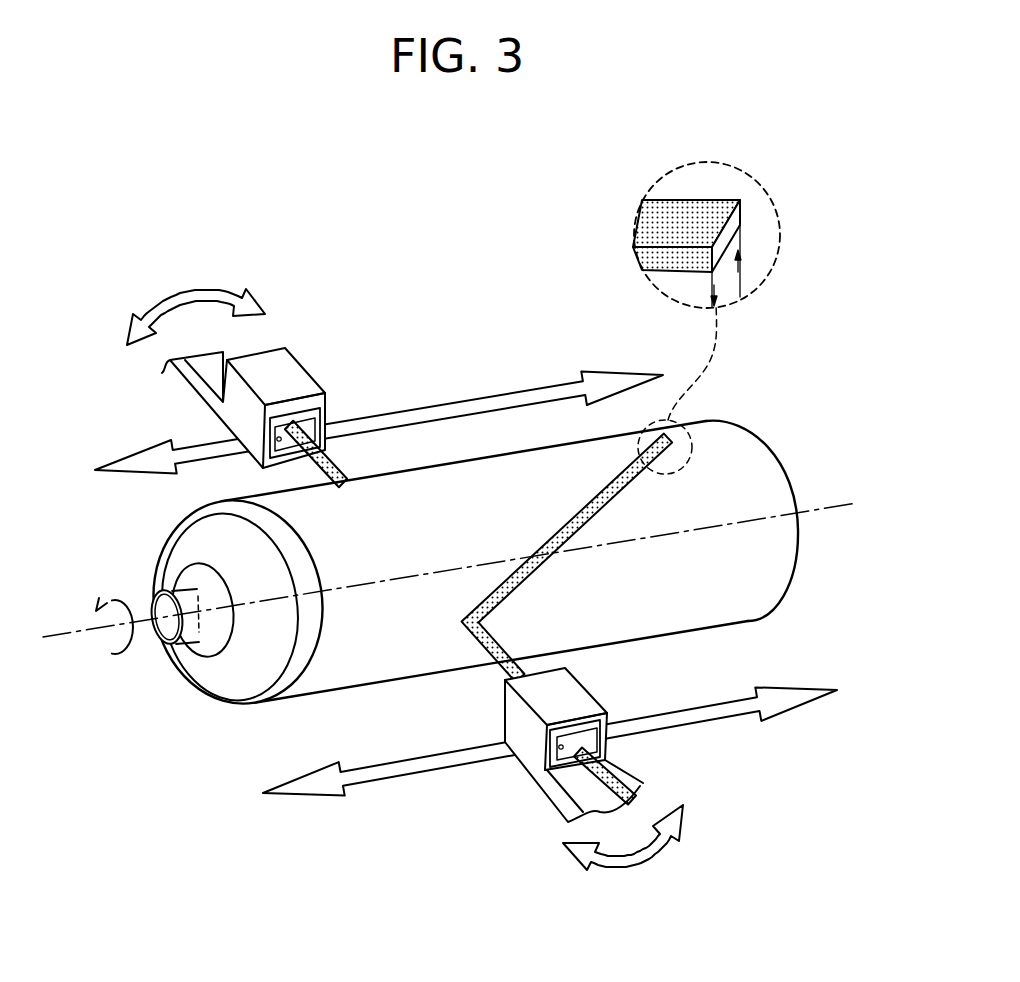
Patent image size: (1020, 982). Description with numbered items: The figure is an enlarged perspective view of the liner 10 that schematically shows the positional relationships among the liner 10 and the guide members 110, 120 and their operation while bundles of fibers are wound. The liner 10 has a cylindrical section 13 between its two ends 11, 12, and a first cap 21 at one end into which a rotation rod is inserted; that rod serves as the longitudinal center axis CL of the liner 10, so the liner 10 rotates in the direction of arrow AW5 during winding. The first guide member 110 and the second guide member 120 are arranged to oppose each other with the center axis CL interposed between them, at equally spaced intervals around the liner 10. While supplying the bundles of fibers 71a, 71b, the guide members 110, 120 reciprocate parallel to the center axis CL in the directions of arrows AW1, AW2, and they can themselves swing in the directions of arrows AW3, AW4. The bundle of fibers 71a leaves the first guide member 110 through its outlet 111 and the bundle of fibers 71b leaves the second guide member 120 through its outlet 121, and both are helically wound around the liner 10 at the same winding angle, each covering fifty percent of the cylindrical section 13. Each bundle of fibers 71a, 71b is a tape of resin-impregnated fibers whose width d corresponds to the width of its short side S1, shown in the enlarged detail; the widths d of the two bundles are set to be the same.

The liner 10 is at (506, 555).
The end of the liner 11 is at (187, 550).
The end of the liner 12 is at (752, 432).
The cylindrical section 13 is at (513, 428).
The first cap 21 is at (157, 640).
The bundle of fibers 71a is at (334, 460).
The bundle of fibers 71b is at (490, 636).
The first guide member 110 is at (263, 401).
The fiber outlet 111 is at (285, 457).
The second guide member 120 is at (581, 742).
The fiber outlet 121 is at (572, 757).
The arrow AW1 is at (480, 395).
The arrow AW2 is at (695, 725).
The arrow AW3 is at (182, 290).
The arrow AW4 is at (650, 870).
The arrow AW5 is at (97, 597).
The center axis CL is at (430, 579).
The short side S1 is at (723, 200).
The width d is at (726, 266).